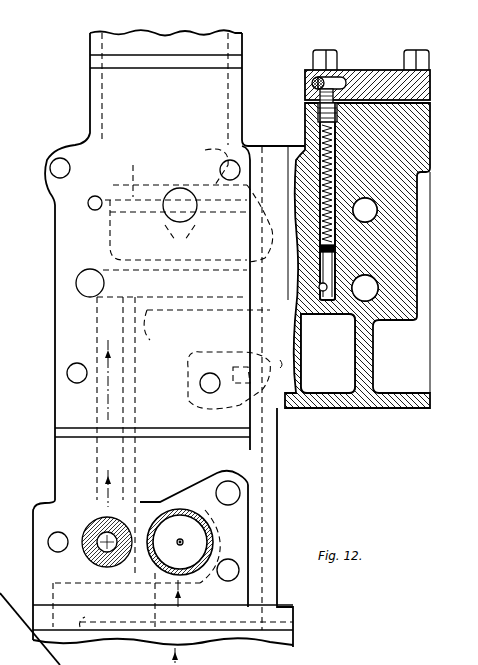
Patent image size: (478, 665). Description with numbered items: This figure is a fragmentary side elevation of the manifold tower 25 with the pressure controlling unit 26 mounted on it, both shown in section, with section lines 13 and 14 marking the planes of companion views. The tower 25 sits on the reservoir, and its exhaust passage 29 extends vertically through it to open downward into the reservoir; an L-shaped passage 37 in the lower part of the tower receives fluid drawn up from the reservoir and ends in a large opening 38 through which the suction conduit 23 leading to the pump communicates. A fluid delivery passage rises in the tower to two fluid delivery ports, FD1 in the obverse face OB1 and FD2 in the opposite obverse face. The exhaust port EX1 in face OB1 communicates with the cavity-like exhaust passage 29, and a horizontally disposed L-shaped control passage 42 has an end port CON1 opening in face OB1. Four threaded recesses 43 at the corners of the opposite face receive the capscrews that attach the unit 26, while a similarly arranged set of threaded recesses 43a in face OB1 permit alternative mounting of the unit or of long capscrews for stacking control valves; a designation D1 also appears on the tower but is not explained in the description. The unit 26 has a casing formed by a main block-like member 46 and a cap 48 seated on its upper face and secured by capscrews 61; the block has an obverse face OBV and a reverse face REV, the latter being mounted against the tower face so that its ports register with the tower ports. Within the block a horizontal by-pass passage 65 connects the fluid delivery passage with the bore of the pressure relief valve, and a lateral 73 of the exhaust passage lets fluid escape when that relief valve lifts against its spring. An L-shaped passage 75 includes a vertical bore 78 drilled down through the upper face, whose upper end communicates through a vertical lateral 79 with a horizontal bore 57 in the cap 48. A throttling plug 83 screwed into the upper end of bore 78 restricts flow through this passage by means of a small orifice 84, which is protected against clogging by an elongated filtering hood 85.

The section line 13 is at (368, 70).
The section line 14 is at (288, 147).
The suction conduit 23 is at (213, 542).
The manifold tower 25 is at (54, 413).
The pressure controlling unit 26 is at (434, 69).
The exhaust passage 29 is at (97, 558).
The L-shaped passage 37 is at (202, 597).
The large opening 38 is at (208, 528).
The control passage 42 is at (143, 168).
The threaded recesses 43 is at (267, 158).
The threaded recesses 43a is at (58, 158).
The main block-like member 46 is at (431, 147).
The cap 48 is at (430, 101).
The horizontal bore 57 is at (338, 79).
The capscrews 61 is at (327, 53).
The by-pass passage 65 is at (368, 300).
The lateral 73 is at (372, 211).
The L-shaped passage 75 is at (337, 178).
The vertical bore 78 is at (347, 302).
The vertical lateral 79 is at (346, 110).
The throttling plug 83 is at (333, 136).
The orifice 84 is at (310, 110).
The filtering hood 85 is at (334, 246).
The control port CON1 is at (88, 204).
The drain port D1 is at (115, 323).
The exhaust port EX1 is at (178, 192).
The fluid delivery port FD1 is at (76, 287).
The fluid delivery port FD2 is at (290, 338).
The obverse face OB1 is at (72, 248).
The obverse face OBV is at (427, 378).
The reverse face REV is at (282, 364).